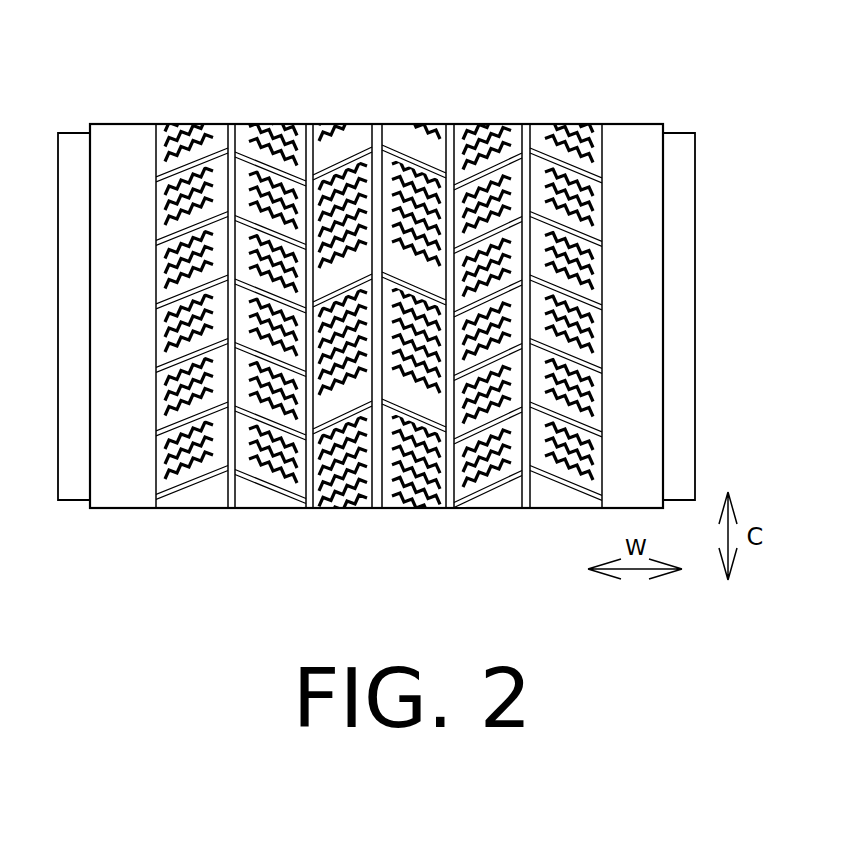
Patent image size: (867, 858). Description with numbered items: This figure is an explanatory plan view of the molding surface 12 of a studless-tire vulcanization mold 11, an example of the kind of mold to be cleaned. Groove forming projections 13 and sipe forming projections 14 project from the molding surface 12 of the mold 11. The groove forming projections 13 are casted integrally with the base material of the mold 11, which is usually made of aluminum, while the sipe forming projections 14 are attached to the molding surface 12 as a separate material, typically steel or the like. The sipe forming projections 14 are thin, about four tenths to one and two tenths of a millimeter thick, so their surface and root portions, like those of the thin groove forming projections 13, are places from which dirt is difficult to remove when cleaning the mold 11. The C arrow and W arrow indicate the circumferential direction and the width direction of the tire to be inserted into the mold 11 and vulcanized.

The mold 11 is at (148, 122).
The molding surface 12 is at (362, 165).
The groove forming projections 13 is at (222, 155).
The sipe forming projections 14 is at (345, 140).